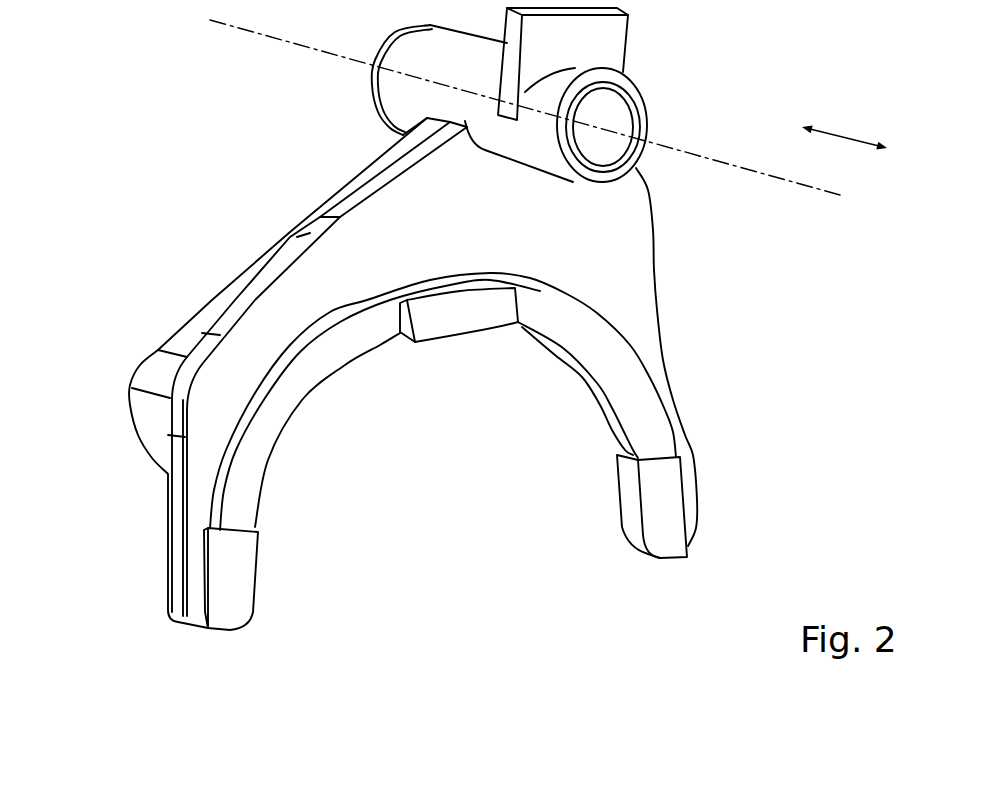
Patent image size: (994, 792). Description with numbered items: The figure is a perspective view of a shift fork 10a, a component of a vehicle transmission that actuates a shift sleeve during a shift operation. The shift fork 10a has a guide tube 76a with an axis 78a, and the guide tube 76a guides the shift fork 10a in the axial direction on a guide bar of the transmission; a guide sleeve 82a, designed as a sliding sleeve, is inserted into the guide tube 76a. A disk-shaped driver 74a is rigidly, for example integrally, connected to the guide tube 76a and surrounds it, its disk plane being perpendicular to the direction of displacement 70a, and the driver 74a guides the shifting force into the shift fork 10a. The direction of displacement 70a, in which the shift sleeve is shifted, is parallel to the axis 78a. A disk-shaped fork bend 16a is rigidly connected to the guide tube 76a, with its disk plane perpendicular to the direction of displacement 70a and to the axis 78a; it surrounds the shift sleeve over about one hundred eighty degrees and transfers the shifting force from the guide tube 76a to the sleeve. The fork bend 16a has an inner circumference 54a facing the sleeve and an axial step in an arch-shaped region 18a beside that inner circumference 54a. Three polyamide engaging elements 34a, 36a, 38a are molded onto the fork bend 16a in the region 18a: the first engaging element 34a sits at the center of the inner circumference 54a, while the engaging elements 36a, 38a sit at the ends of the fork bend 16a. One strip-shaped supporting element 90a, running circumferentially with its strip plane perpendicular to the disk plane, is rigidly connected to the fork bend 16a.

The shift fork 10a is at (175, 146).
The fork bend 16a is at (635, 293).
The region 18a is at (650, 336).
The first engaging element 34a is at (460, 313).
The engaging element 36a is at (232, 575).
The engaging element 38a is at (660, 505).
The inner circumference 54a is at (597, 387).
The direction of displacement 70a is at (847, 133).
The driver 74a is at (605, 30).
The guide tube 76a is at (645, 104).
The axis 78a is at (782, 182).
The guide sleeve 82a is at (633, 125).
The supporting element 90a is at (192, 333).